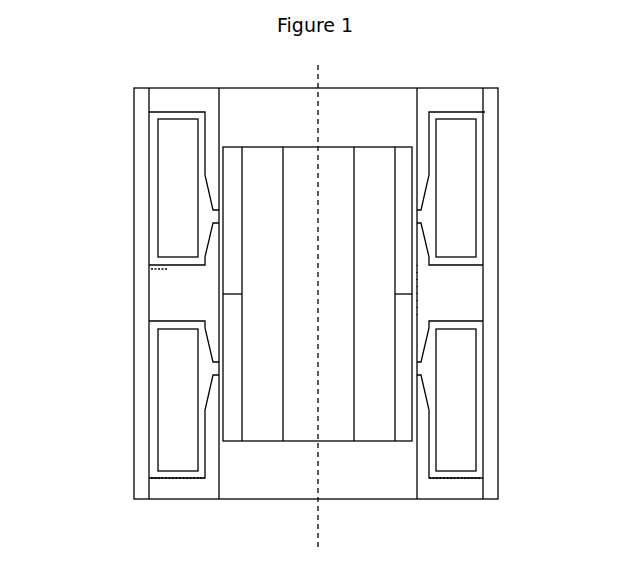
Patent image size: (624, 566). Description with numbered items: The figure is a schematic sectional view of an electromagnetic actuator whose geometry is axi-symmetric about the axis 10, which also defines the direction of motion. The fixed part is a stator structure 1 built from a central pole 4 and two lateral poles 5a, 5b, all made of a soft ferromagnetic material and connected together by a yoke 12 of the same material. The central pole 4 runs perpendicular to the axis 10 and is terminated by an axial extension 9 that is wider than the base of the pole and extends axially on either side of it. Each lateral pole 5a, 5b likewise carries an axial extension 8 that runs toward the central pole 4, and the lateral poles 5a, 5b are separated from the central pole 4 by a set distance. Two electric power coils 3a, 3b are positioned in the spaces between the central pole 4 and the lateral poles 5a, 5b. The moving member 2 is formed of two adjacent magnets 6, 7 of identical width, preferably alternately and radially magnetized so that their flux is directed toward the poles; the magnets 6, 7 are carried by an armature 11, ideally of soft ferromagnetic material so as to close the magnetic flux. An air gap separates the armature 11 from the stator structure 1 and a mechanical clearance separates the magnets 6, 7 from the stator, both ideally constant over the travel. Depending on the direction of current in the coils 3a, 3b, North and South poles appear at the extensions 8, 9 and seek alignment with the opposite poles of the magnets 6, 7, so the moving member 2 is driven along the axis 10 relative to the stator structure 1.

The stator structure 1 is at (506, 123).
The moving member 2 is at (369, 447).
The electric power coil 3a is at (456, 222).
The electric power coil 3b is at (462, 392).
The central pole 4 is at (463, 300).
The lateral pole 5a is at (459, 107).
The lateral pole 5b is at (469, 482).
The magnet 6 is at (401, 170).
The magnet 7 is at (235, 374).
The axial extension 8 is at (221, 134).
The axial extension 9 is at (218, 255).
The axis 10 is at (313, 534).
The armature 11 is at (252, 413).
The yoke 12 is at (486, 162).